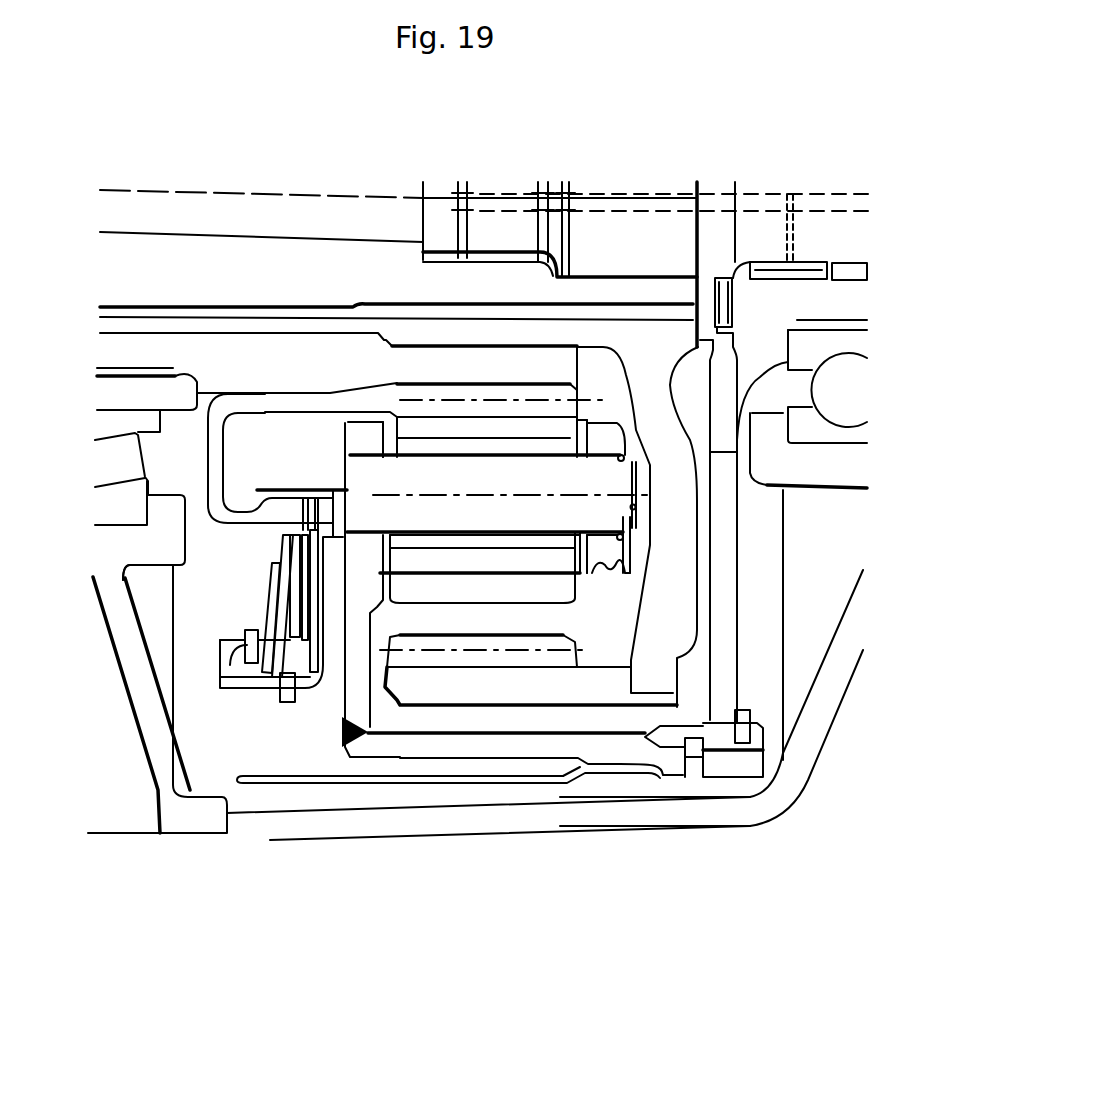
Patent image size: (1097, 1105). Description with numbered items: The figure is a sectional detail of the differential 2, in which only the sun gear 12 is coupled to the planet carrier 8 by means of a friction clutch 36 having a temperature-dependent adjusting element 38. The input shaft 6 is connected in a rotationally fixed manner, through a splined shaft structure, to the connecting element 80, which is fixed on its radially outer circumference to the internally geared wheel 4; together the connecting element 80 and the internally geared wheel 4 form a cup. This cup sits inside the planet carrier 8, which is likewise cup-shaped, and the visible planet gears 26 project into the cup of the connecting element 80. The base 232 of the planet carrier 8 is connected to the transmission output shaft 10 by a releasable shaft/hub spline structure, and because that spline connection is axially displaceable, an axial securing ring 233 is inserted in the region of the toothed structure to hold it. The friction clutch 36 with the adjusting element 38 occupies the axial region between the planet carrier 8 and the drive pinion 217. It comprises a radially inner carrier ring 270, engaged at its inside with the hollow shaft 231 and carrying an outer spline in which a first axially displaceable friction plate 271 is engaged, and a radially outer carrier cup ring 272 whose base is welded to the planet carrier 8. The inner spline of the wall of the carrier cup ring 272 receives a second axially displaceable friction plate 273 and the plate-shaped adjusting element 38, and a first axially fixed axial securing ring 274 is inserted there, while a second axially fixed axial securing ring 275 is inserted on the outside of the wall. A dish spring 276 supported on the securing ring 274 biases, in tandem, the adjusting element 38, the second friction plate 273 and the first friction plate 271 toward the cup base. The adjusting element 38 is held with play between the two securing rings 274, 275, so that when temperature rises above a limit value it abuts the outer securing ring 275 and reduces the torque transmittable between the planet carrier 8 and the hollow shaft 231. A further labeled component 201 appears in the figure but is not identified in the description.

The differential 2 is at (604, 800).
The internally geared wheel 4 is at (470, 694).
The input shaft 6 is at (243, 279).
The planet carrier 8 is at (368, 580).
The transmission output shaft 10 is at (776, 313).
The sun gear 12 is at (487, 371).
The planet gears 26 is at (455, 598).
The friction clutch 36 is at (233, 566).
The temperature-dependent adjusting element 38 is at (293, 552).
The connecting element 80 is at (650, 495).
The axis line 201 is at (323, 190).
The drive pinion 217 is at (152, 401).
The hollow shaft 231 is at (157, 359).
The base 232 is at (727, 620).
The axial securing ring 233 is at (760, 727).
The radially inner carrier ring 270 is at (300, 490).
The first axially displaceable friction plate 271 is at (299, 553).
The radially outer carrier cup ring 272 is at (327, 627).
The second axially displaceable friction plate 273 is at (305, 550).
The first axially fixed axial securing ring 274 is at (257, 612).
The second axially fixed axial securing ring 275 is at (293, 702).
The dish spring 276 is at (245, 655).